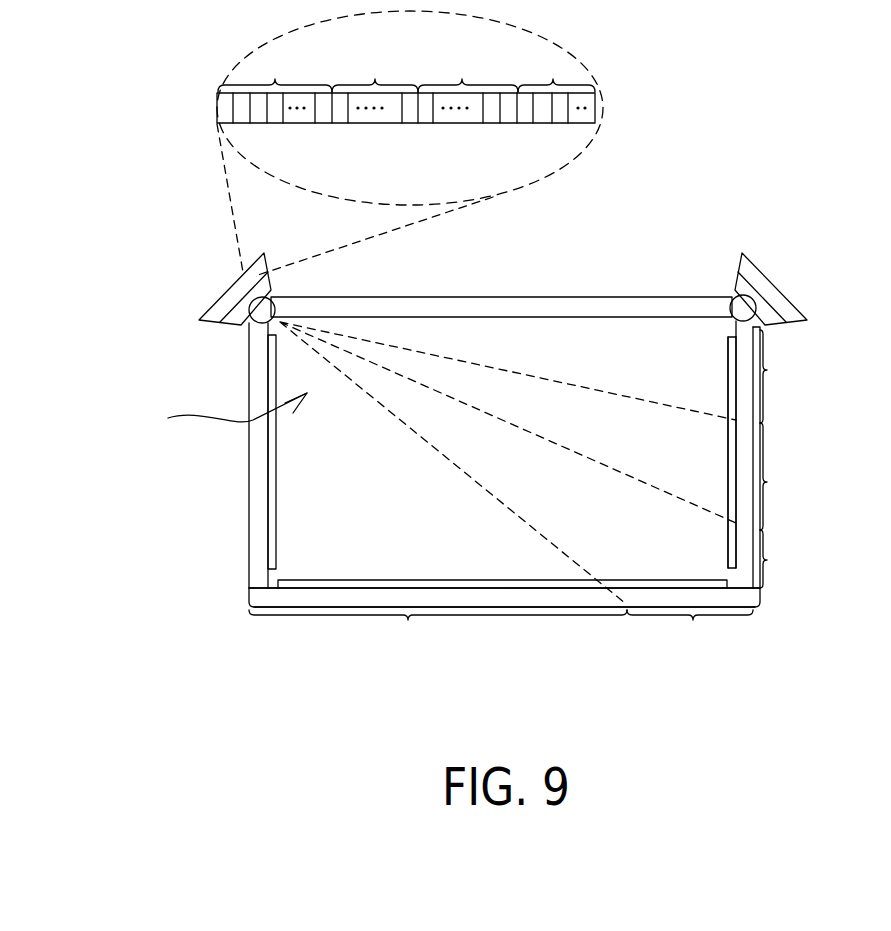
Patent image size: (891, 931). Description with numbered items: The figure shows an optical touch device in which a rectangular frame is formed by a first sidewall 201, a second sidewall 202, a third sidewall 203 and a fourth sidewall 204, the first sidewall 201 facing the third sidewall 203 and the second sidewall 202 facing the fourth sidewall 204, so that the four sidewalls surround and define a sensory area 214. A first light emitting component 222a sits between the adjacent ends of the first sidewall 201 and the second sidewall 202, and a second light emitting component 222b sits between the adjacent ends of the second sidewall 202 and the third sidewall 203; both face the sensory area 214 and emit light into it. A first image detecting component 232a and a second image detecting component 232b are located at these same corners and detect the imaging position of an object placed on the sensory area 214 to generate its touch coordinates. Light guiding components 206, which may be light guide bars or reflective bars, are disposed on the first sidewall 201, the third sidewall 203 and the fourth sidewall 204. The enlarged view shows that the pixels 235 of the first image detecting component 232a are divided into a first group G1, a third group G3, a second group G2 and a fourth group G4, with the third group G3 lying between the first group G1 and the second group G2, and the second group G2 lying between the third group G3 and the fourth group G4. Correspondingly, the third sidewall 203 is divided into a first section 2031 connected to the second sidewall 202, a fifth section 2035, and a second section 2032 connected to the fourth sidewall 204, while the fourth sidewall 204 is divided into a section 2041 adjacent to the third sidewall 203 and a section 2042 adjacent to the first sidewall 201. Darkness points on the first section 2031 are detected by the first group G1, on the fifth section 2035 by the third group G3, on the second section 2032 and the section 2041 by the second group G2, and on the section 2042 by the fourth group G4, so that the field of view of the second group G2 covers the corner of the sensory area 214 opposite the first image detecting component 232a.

The first sidewall 201 is at (260, 495).
The second sidewall 202 is at (520, 308).
The third sidewall 203 is at (745, 445).
The first section 2031 is at (792, 376).
The fifth section 2035 is at (794, 476).
The second section 2032 is at (794, 559).
The fourth sidewall 204 is at (557, 598).
The section adjacent to the third sidewall 2041 is at (690, 635).
The section adjacent to the first sidewall 2042 is at (438, 635).
The light guiding component 206 is at (272, 553).
The sensory area 214 is at (215, 414).
The first light emitting component 222a is at (258, 318).
The second light emitting component 222b is at (738, 308).
The first image detecting component 232a is at (233, 297).
The second image detecting component 232b is at (750, 292).
The pixels 235 is at (243, 108).
The first group G1 is at (275, 68).
The second group G2 is at (468, 68).
The third group G3 is at (375, 68).
The fourth group G4 is at (556, 68).